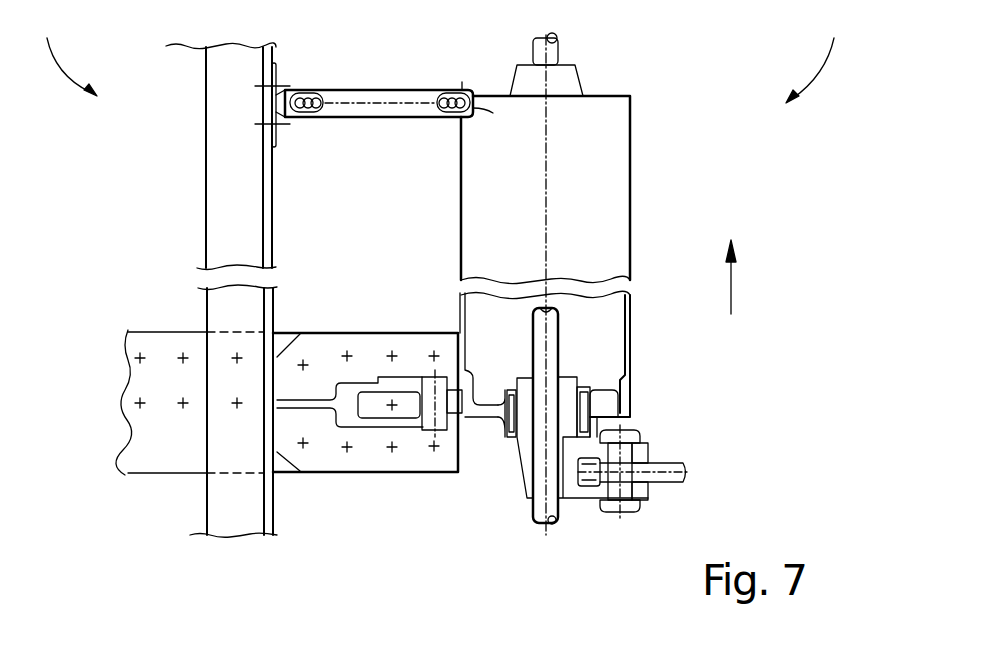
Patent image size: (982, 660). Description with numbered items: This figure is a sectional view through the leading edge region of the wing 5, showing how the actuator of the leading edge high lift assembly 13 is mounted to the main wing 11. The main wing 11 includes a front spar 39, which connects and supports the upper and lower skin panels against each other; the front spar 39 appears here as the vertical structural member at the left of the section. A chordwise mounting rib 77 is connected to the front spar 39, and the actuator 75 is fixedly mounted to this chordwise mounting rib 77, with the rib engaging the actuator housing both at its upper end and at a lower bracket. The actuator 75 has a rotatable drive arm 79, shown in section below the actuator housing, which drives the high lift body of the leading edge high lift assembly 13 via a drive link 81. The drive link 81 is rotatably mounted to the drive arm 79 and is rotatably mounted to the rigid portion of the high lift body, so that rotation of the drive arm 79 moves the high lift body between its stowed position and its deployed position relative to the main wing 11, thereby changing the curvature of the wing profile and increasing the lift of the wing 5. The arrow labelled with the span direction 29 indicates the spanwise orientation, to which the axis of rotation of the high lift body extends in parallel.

The wing 5 is at (67, 53).
The main wing 11 is at (150, 248).
The leading edge high lift assembly 13 is at (822, 57).
The span direction 29 is at (733, 292).
The front spar 39 is at (227, 172).
The actuator 75 is at (608, 150).
The chordwise mounting rib 77 is at (373, 100).
The drive arm 79 is at (570, 485).
The drive link 81 is at (663, 468).